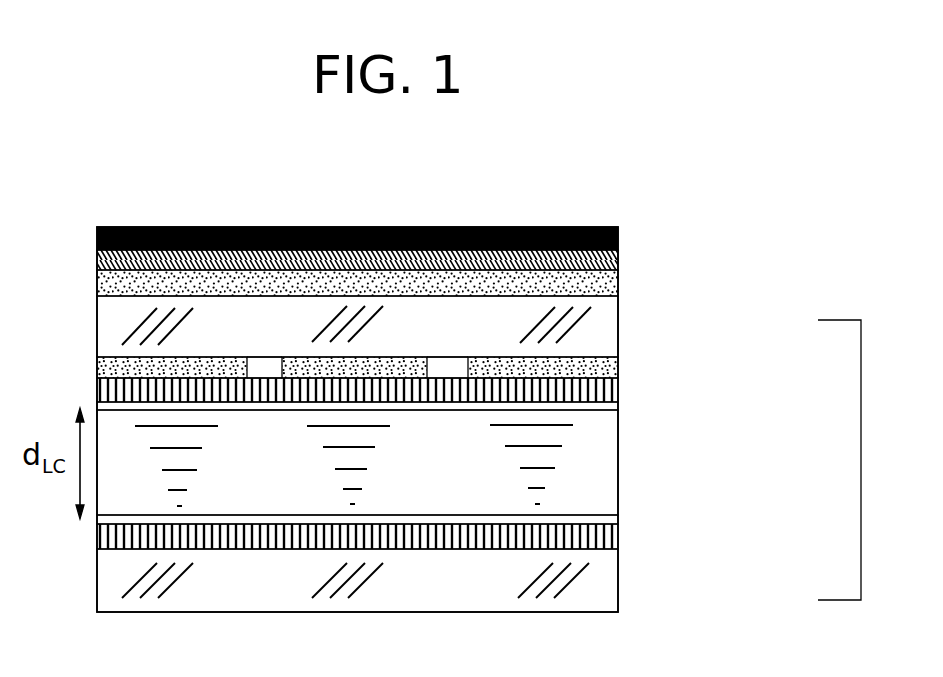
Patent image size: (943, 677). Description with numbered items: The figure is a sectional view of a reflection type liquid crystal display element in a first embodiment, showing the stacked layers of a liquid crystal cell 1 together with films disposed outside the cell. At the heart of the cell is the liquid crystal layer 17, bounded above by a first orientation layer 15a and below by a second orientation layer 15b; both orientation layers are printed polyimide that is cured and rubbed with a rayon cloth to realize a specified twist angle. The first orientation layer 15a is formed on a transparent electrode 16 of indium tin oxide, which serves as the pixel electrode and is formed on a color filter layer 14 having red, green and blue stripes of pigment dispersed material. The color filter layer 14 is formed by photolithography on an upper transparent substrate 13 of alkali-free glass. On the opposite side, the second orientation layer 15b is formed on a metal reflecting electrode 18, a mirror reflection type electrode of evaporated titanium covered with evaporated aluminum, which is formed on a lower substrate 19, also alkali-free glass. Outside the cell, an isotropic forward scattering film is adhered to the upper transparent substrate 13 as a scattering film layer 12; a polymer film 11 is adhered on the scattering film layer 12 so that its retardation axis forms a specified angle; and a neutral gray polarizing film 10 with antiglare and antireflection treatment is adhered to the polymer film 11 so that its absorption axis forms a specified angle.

The liquid crystal cell 1 is at (855, 460).
The polarizing film layer 10 is at (618, 237).
The polymer film 11 is at (618, 260).
The scattering film layer 12 is at (618, 283).
The upper transparent substrate 13 is at (595, 323).
The color filter layer 14 is at (618, 370).
The transparent electrode 16 is at (615, 393).
The first orientation layer 15a is at (618, 403).
The liquid crystal layer 17 is at (600, 471).
The second orientation layer 15b is at (608, 520).
The metal reflecting electrode 18 is at (612, 537).
The lower substrate 19 is at (598, 581).